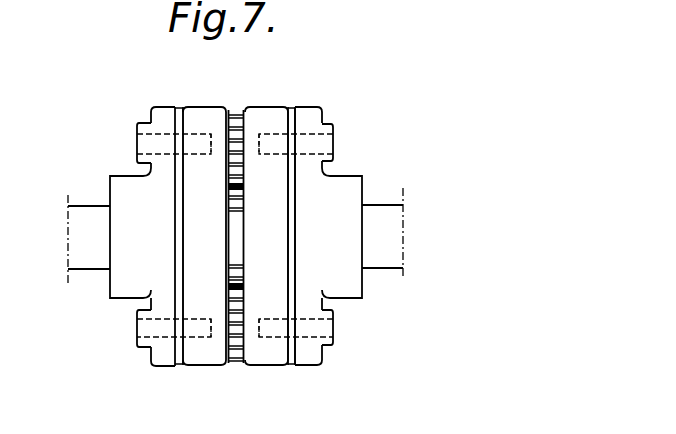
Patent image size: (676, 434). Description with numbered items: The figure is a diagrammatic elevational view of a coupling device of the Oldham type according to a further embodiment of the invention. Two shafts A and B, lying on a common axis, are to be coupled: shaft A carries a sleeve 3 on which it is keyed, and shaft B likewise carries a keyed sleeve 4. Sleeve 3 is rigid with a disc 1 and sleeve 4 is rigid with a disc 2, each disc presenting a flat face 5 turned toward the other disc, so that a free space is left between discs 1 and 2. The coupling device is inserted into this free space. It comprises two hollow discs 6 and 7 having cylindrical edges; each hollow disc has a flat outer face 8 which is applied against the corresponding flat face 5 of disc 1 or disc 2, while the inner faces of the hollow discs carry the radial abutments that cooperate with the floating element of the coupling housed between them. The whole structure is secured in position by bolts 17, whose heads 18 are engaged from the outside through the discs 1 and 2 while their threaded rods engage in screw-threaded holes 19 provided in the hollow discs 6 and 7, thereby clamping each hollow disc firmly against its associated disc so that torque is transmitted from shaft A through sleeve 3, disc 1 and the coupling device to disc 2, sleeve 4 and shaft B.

The disc 1 is at (156, 118).
The disc 2 is at (310, 113).
The sleeve 3 is at (118, 195).
The sleeve 4 is at (348, 187).
The flat face 5 is at (180, 110).
The hollow disc 6 is at (205, 115).
The hollow disc 7 is at (267, 117).
The outer face 8 is at (185, 353).
The bolt 17 is at (300, 330).
The head 18 is at (330, 330).
The screw-threaded hole 19 is at (250, 335).
The shaft A is at (77, 233).
The shaft B is at (387, 222).